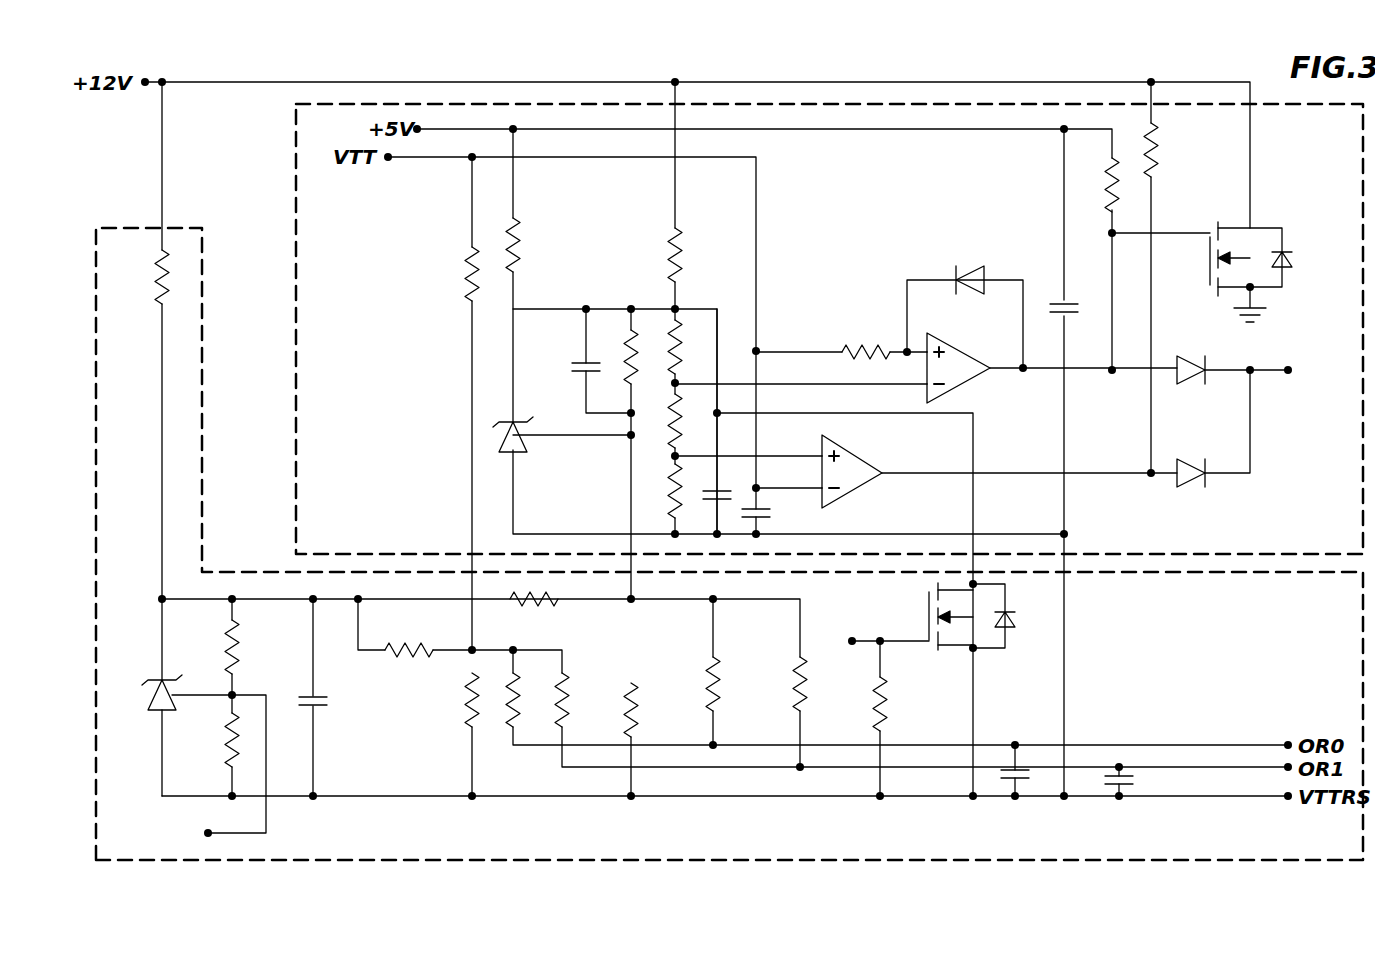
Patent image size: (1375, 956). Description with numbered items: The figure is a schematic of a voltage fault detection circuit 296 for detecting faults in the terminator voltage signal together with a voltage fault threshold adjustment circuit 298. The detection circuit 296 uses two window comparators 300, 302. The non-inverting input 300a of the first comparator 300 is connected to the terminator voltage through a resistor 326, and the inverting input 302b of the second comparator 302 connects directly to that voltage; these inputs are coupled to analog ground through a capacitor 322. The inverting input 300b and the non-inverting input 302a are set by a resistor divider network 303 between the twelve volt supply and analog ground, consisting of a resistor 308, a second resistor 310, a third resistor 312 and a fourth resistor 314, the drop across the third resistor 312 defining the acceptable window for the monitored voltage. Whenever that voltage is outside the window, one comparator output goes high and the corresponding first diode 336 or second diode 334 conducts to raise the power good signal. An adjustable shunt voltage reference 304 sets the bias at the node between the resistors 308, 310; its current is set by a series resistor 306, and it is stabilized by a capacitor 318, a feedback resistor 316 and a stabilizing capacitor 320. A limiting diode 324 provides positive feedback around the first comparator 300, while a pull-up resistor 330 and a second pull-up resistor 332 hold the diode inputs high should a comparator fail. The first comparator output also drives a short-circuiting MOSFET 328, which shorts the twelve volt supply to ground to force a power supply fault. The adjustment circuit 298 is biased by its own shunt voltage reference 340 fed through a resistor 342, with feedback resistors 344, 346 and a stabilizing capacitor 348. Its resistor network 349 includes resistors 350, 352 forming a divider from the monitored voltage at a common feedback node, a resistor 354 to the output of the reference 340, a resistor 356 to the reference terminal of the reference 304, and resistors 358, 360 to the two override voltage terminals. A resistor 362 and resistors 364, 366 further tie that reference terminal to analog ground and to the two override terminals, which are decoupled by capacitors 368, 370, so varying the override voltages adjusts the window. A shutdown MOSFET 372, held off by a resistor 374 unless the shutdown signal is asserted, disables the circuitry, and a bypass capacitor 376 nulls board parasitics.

The voltage fault detection circuit 296 is at (296, 214).
The voltage fault threshold adjustment circuit 298 is at (212, 378).
The first window comparator 300 is at (926, 346).
The non-inverting input of first comparator 300a is at (920, 350).
The inverting input of first comparator 300b is at (920, 386).
The second window comparator 302 is at (926, 468).
The non-inverting input of second comparator 302a is at (828, 452).
The inverting input of second comparator 302b is at (824, 496).
The resistor divider network 303 is at (693, 413).
The adjustable shunt voltage reference 304 is at (500, 436).
The series resistor 306 is at (520, 240).
The resistor 308 is at (682, 240).
The second resistor 310 is at (682, 345).
The third resistor 312 is at (668, 428).
The fourth resistor 314 is at (670, 462).
The feedback resistor 316 is at (626, 345).
The voltage stabilizing capacitor 318 is at (584, 364).
The stabilizing capacitor 320 is at (700, 500).
The capacitor 322 is at (762, 508).
The limiting diode 324 is at (968, 268).
The resistor 326 is at (868, 345).
The short-circuiting MOSFET 328 is at (1256, 226).
The pull-up resistor 330 is at (1118, 184).
The second pull-up resistor 332 is at (1160, 150).
The second diode 334 is at (1194, 485).
The first diode 336 is at (1190, 382).
The shunt voltage reference 340 is at (162, 672).
The resistor 342 is at (160, 280).
The external feedback resistor 344 is at (240, 642).
The second external feedback resistor 346 is at (226, 736).
The stabilizing capacitor 348 is at (322, 698).
The resistor network 349 is at (588, 778).
The resistor 350 is at (470, 266).
The resistor 352 is at (466, 712).
The resistor 354 is at (408, 654).
The resistor 356 is at (548, 600).
The resistor 358 is at (518, 716).
The resistor 360 is at (566, 682).
The resistor 362 is at (634, 686).
The resistor 364 is at (716, 664).
The resistor 366 is at (802, 704).
The capacitor 368 is at (1020, 790).
The capacitor 370 is at (1128, 770).
The shutdown MOSFET 372 is at (984, 650).
The resistor 374 is at (888, 702).
The bypass capacitor 376 is at (1068, 300).